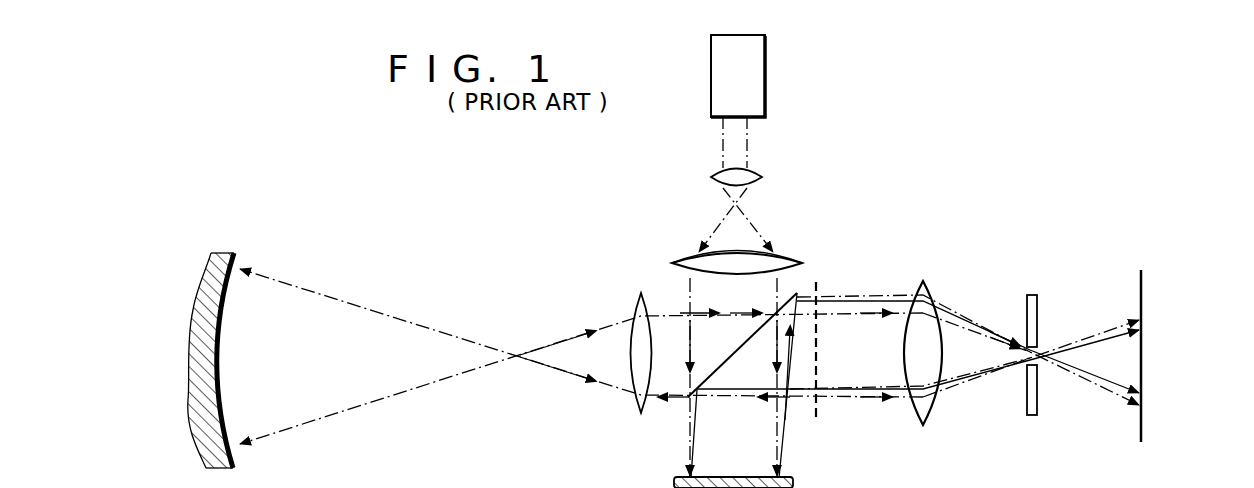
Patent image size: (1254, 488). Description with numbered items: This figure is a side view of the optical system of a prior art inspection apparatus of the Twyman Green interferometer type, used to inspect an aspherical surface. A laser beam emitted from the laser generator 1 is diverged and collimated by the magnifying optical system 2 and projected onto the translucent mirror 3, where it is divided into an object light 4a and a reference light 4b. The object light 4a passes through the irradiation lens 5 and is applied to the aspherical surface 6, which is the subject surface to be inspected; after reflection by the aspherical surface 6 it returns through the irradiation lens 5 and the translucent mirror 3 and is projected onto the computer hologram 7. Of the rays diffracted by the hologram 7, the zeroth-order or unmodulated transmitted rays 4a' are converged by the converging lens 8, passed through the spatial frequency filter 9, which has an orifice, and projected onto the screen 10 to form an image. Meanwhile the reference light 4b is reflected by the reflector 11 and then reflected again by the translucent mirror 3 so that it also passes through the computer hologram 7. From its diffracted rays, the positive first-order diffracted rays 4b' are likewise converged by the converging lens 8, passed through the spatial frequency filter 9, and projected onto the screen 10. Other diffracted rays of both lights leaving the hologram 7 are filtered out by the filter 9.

The laser generator 1 is at (765, 78).
The magnifying optical system 2 is at (782, 208).
The translucent mirror 3 is at (688, 400).
The object light 4a is at (581, 356).
The reference light 4b is at (703, 378).
The zeroth-order diffracted rays 4a' is at (964, 348).
The positive first-order diffracted rays 4b' is at (918, 339).
The irradiation lens 5 is at (636, 300).
The aspherical surface 6 is at (223, 313).
The computer hologram 7 is at (818, 420).
The converging lens 8 is at (920, 425).
The spatial frequency filter 9 is at (1038, 310).
The screen 10 is at (1143, 284).
The reflector 11 is at (752, 476).